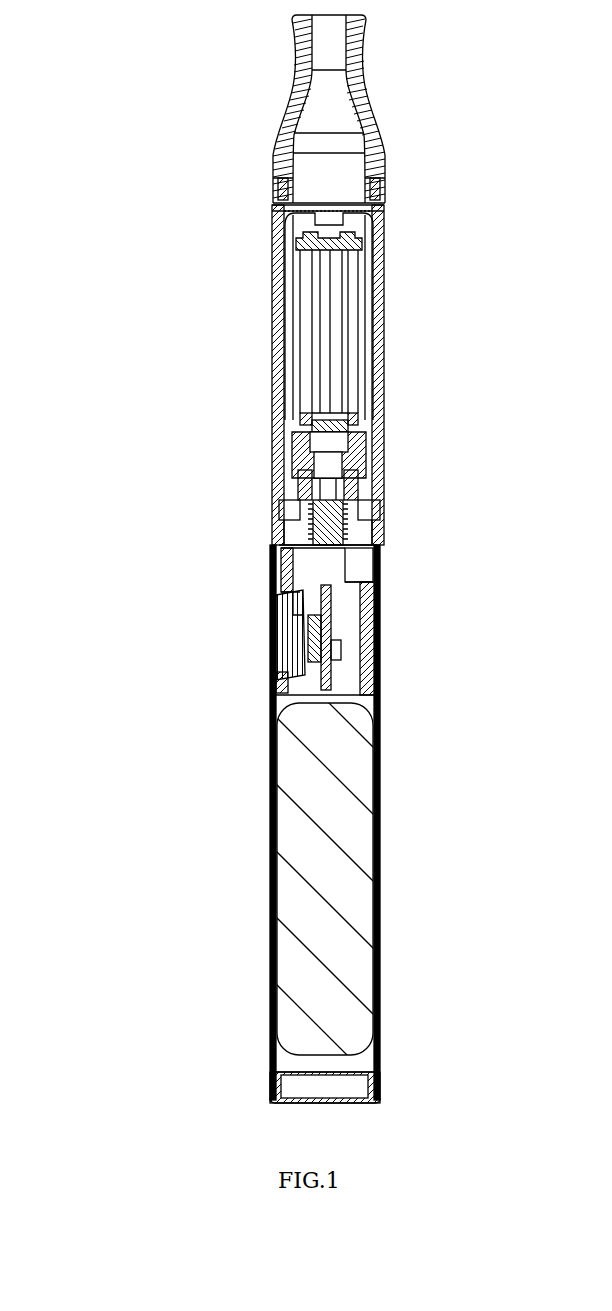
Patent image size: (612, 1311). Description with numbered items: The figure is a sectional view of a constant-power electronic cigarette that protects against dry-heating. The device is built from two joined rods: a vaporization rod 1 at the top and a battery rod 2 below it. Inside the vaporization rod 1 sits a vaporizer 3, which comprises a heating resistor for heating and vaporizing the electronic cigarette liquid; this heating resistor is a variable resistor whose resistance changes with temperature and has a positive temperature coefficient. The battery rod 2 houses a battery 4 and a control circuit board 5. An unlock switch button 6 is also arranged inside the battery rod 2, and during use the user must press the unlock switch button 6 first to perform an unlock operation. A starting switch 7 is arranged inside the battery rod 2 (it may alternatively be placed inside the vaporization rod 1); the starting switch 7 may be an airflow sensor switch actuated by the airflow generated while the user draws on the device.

The vaporization rod 1 is at (383, 382).
The battery rod 2 is at (386, 768).
The vaporizer 3 is at (323, 440).
The battery 4 is at (313, 916).
The control circuit board 5 is at (373, 645).
The unlock switch button 6 is at (280, 640).
The starting switch 7 is at (338, 637).